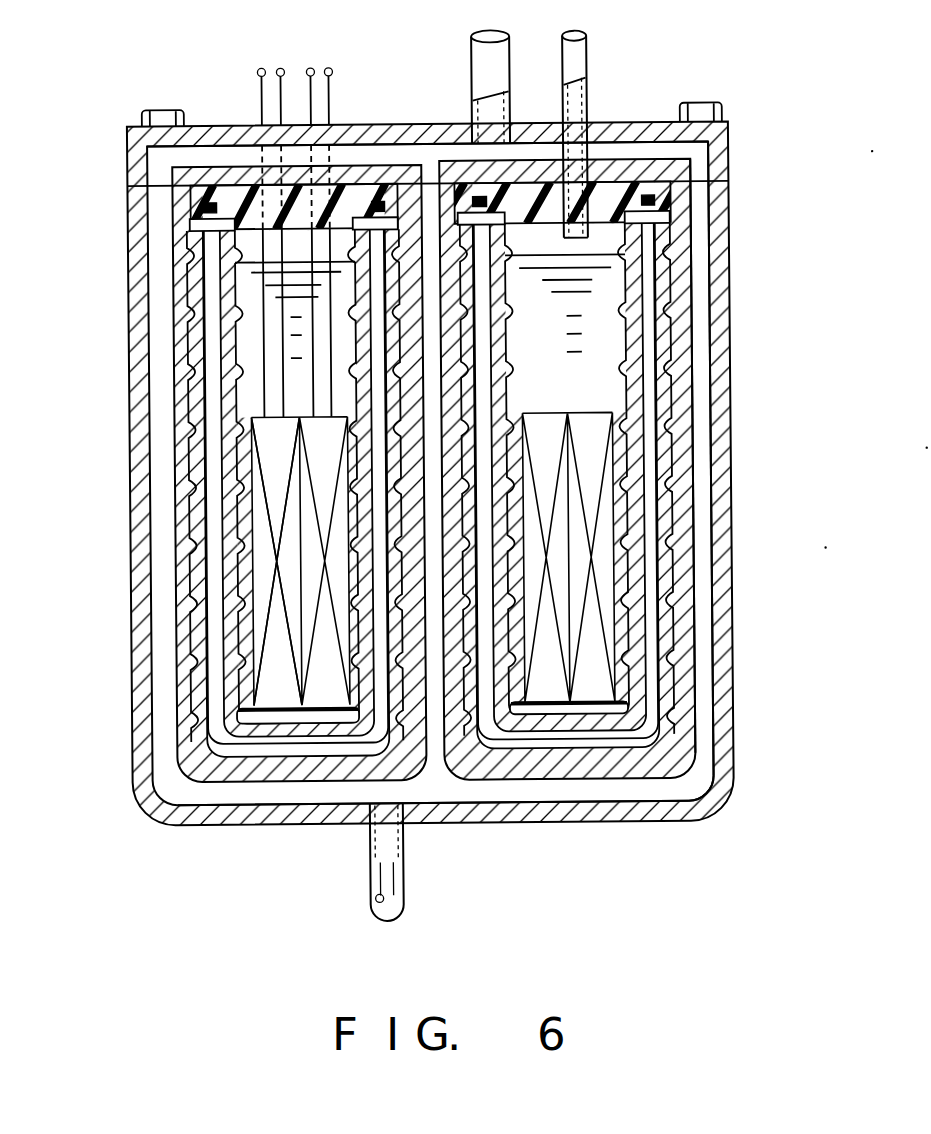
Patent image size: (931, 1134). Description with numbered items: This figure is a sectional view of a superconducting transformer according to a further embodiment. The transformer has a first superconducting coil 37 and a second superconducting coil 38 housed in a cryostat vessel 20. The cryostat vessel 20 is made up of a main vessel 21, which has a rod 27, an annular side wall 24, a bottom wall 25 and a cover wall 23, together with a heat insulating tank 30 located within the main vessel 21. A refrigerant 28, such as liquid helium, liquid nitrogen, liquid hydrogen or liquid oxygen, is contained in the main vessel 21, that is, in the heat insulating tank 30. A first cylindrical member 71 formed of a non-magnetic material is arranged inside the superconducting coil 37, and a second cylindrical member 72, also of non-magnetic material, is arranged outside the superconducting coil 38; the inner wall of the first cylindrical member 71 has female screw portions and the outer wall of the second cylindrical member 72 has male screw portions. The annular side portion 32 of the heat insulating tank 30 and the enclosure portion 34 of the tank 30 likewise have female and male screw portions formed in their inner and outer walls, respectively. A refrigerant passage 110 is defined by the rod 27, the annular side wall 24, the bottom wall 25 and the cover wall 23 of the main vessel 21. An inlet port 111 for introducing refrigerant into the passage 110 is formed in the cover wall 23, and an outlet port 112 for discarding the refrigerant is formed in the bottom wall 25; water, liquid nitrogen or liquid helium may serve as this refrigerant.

The cryostat vessel 20 is at (780, 248).
The main vessel 21 is at (737, 221).
The cover wall 23 is at (738, 163).
The annular side wall 24 is at (733, 440).
The bottom wall 25 is at (315, 814).
The rod 27 is at (448, 354).
The refrigerant 28 is at (608, 375).
The heat insulating tank 30 is at (685, 282).
The annular side portion 32 is at (664, 550).
The enclosure portion 34 is at (499, 299).
The first superconducting coil 37 is at (315, 481).
The second superconducting coil 38 is at (266, 576).
The first cylindrical member 71 is at (343, 684).
The second cylindrical member 72 is at (241, 670).
The refrigerant passage 110 is at (662, 790).
The inlet port 111 is at (512, 66).
The outlet port 112 is at (398, 880).